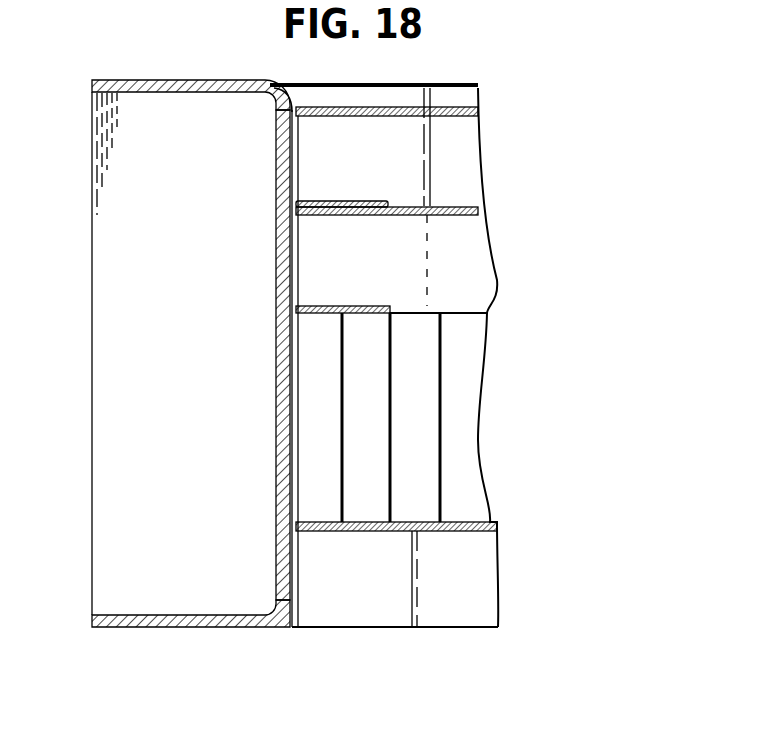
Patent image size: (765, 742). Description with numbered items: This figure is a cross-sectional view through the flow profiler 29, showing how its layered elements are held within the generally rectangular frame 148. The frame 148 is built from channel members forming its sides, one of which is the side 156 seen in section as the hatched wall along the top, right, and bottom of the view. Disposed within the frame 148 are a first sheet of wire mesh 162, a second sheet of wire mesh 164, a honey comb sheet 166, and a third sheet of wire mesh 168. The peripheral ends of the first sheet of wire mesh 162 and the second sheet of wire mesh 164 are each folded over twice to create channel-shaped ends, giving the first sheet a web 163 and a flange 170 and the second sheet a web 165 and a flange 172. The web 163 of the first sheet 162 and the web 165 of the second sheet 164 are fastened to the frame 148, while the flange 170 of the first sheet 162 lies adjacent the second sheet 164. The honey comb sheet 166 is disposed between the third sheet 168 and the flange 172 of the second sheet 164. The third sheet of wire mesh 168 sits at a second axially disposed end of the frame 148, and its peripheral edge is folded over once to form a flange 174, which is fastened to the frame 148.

The flow profiler 29 is at (580, 99).
The frame 148 is at (158, 632).
The side 156 is at (277, 138).
The first sheet of wire mesh 162 is at (475, 90).
The web 163 is at (280, 174).
The second sheet of wire mesh 164 is at (457, 210).
The web 165 is at (290, 275).
The honey comb sheet 166 is at (465, 384).
The third sheet of wire mesh 168 is at (455, 523).
The flange 170 is at (370, 203).
The flange 172 is at (375, 307).
The flange 174 is at (298, 582).